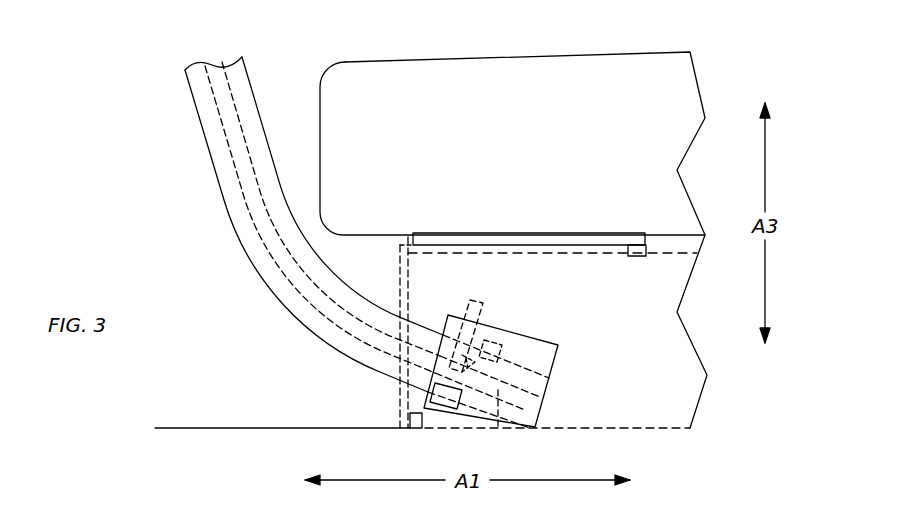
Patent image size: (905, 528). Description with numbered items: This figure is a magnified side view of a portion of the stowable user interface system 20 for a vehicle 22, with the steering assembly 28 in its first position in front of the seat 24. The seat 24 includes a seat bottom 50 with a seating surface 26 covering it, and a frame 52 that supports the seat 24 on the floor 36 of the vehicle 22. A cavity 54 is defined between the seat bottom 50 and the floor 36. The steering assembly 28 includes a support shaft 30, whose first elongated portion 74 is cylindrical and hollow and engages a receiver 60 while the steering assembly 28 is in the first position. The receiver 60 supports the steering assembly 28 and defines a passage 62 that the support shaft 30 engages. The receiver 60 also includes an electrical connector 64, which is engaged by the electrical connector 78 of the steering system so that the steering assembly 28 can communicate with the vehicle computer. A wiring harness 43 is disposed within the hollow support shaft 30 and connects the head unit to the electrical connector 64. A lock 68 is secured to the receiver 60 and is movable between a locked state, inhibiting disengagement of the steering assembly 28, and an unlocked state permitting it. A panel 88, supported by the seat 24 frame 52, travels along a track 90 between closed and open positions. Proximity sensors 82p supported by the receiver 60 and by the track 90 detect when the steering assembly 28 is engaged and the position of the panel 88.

The stowable user interface system 20 is at (97, 160).
The vehicle 22 is at (180, 430).
The seat 24 is at (680, 92).
The seating surface 26 is at (537, 58).
The steering assembly 28 is at (192, 102).
The support shaft 30 is at (200, 140).
The floor 36 is at (300, 428).
The wiring harness 43 is at (283, 280).
The seat bottom 50 is at (455, 82).
The frame 52 is at (402, 238).
The cavity 54 is at (629, 334).
The receiver 60 is at (547, 355).
The passage 62 is at (478, 335).
The electrical connector 64 is at (543, 396).
The lock 68 is at (445, 402).
The first elongated portion 74 is at (213, 180).
The electrical connector 78 is at (458, 357).
The proximity sensor 82p is at (503, 350).
The panel 88 is at (573, 240).
The track 90 is at (412, 263).